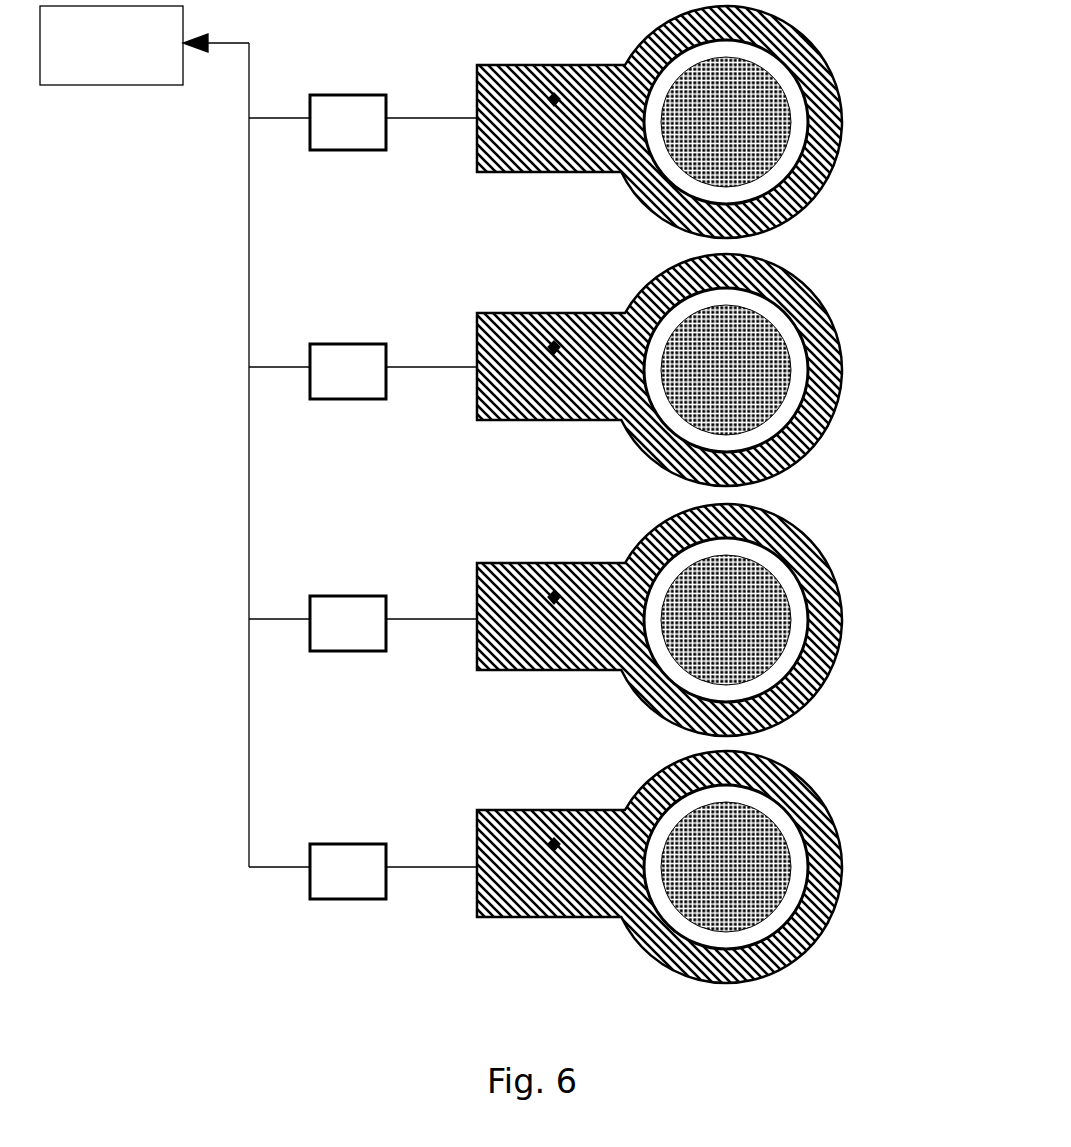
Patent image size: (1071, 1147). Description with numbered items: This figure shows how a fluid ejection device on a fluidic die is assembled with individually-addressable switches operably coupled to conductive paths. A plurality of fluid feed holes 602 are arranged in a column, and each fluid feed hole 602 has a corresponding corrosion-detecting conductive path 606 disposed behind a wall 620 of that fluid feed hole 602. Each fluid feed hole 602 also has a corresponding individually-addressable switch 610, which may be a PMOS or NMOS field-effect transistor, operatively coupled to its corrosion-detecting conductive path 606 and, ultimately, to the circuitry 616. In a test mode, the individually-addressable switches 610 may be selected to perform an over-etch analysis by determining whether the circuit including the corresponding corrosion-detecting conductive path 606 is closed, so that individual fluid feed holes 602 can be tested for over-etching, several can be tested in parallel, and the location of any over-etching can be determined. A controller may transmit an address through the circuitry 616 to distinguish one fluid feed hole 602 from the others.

The circuitry 616 is at (135, 76).
The individually-addressable switch 610 is at (367, 885).
The fluid feed hole 602 is at (772, 146).
The wall 620 is at (767, 97).
The corrosion-detecting conductive path 606 is at (541, 837).